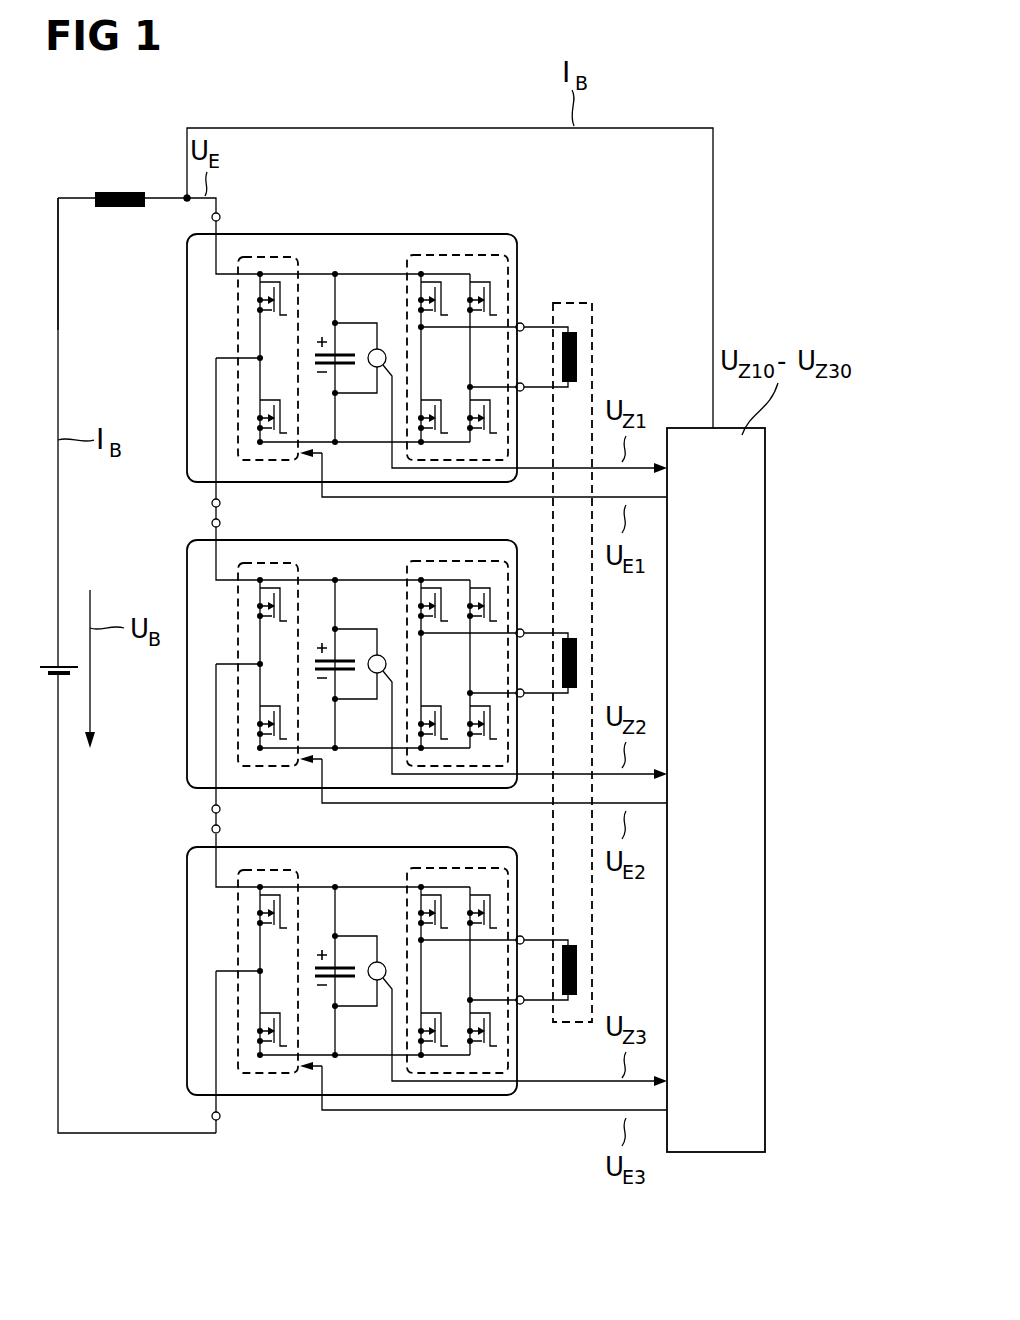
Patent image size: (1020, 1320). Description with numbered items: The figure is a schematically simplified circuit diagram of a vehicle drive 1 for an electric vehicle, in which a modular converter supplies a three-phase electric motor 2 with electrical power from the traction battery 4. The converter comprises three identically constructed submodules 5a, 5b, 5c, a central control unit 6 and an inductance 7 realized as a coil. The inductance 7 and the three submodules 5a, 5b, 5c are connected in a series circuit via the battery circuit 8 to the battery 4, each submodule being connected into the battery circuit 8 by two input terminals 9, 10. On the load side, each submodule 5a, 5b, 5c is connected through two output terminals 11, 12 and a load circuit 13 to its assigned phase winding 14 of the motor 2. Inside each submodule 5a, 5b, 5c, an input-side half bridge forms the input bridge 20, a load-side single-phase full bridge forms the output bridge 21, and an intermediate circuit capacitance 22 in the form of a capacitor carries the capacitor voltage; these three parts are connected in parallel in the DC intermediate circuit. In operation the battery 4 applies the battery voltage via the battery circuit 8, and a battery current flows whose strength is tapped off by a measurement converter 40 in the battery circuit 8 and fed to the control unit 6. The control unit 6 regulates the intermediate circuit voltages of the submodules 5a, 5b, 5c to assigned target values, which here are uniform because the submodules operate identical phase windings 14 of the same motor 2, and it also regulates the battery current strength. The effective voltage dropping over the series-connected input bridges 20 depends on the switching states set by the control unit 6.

The vehicle drive 1 is at (664, 96).
The electric motor 2 is at (592, 313).
The battery 4 is at (50, 660).
The submodule 5a is at (187, 372).
The submodule 5b is at (187, 678).
The submodule 5c is at (187, 986).
The control unit 6 is at (718, 1154).
The inductance 7 is at (120, 190).
The battery circuit 8 is at (77, 196).
The input terminal 9 is at (212, 829).
The input terminal 10 is at (212, 1116).
The output terminal 11 is at (527, 935).
The output terminal 12 is at (535, 1038).
The load circuit 13 is at (558, 938).
The phase winding 14 is at (608, 970).
The input bridge 20 is at (268, 868).
The output bridge 21 is at (452, 866).
The intermediate circuit capacitance 22 is at (343, 965).
The measurement converter 40 is at (183, 202).